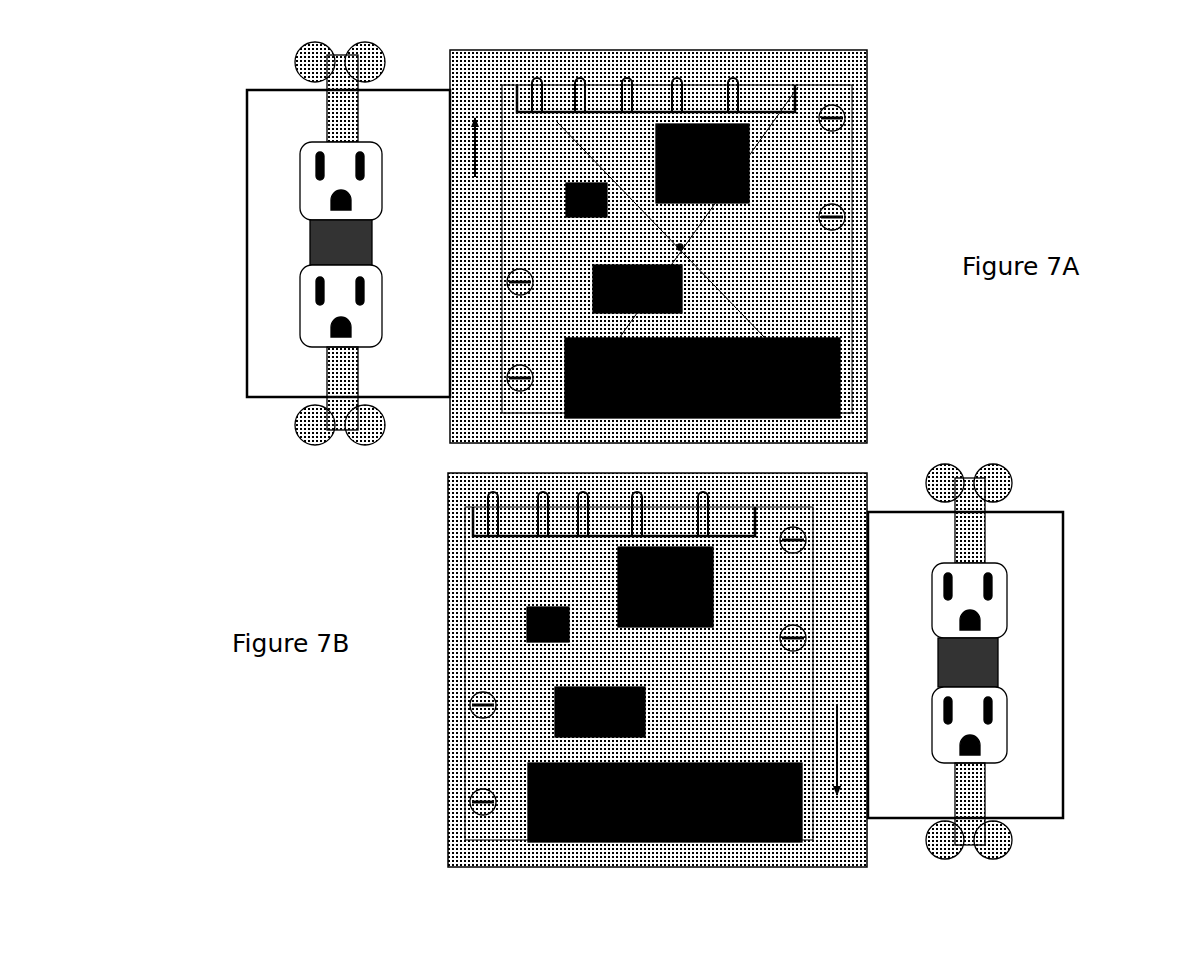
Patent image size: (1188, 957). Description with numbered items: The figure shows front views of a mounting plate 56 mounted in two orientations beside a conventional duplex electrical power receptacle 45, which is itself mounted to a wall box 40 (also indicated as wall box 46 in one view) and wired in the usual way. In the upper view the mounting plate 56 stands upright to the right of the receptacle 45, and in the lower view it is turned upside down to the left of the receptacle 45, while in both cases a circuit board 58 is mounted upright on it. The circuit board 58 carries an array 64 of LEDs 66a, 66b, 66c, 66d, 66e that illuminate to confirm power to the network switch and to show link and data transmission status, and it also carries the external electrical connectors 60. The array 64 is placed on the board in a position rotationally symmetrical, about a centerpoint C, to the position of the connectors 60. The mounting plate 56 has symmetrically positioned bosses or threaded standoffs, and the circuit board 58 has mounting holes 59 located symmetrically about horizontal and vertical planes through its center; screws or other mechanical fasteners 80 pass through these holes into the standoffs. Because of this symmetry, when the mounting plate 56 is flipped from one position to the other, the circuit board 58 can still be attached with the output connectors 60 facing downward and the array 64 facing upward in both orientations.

In FIG. 7B, the wall box 40 is at (1025, 512).
In FIG. 7A, the duplex electrical power receptacle 45 is at (310, 240).
In FIG. 7B, the duplex electrical power receptacle 45 is at (998, 665).
In FIG. 7A, the electrical box 46 is at (406, 90).
In FIG. 7A, the mounting plate 56 is at (859, 390).
In FIG. 7B, the mounting plate 56 is at (847, 858).
In FIG. 7A, the circuit board 58 is at (798, 87).
In FIG. 7B, the circuit board 58 is at (480, 832).
In FIG. 7A, the mounting holes 59 is at (846, 205).
In FIG. 7A, the external electrical connectors 60 is at (840, 406).
In FIG. 7B, the external electrical connectors 60 is at (800, 845).
In FIG. 7A, the array of LEDs 64 is at (562, 108).
In FIG. 7B, the array of LEDs 64 is at (665, 528).
In FIG. 7A, the LED 66a is at (534, 95).
In FIG. 7A, the LED 66b is at (585, 90).
In FIG. 7A, the LED 66c is at (632, 92).
In FIG. 7A, the LED 66d is at (682, 92).
In FIG. 7A, the LED 66e is at (738, 92).
In FIG. 7A, the mechanical fasteners 80 is at (378, 505).
In FIG. 7B, the mechanical fasteners 80 is at (943, 397).
In FIG. 7A, the centerpoint C is at (682, 247).